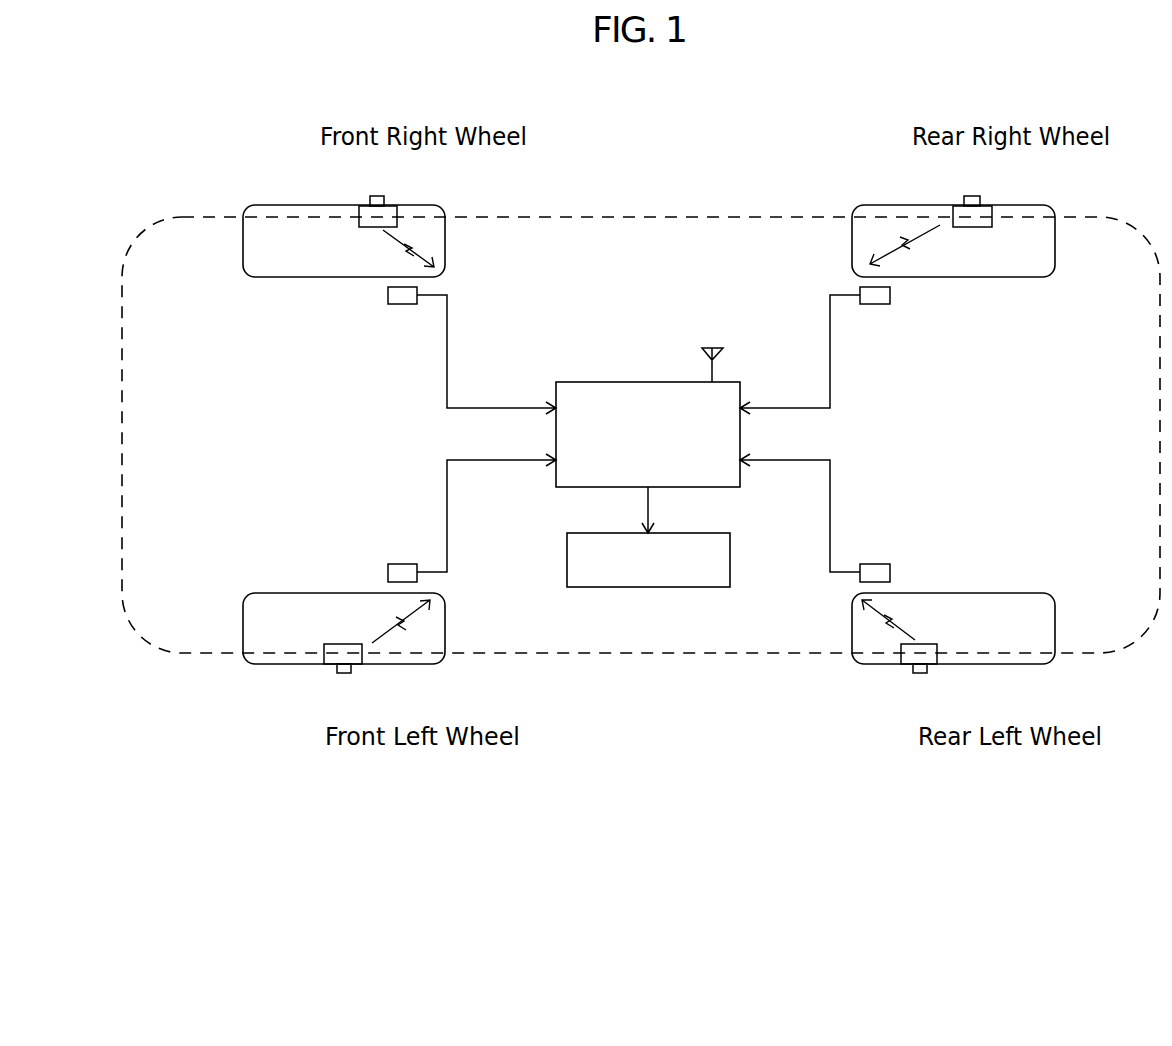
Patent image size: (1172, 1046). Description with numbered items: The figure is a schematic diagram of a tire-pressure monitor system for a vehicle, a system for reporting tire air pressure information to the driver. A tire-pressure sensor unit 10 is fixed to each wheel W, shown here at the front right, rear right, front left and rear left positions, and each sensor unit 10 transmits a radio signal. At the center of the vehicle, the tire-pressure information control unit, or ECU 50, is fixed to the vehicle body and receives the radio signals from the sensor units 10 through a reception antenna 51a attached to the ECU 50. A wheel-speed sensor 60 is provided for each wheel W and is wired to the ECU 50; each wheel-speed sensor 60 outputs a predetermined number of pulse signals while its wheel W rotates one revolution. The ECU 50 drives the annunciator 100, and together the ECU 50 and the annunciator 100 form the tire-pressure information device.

The tire-pressure sensor unit 10 is at (395, 205).
The tire-pressure information control unit 50 is at (596, 382).
The reception antenna 51a is at (714, 362).
The wheel-speed sensor 60 is at (402, 304).
The annunciator 100 is at (731, 559).
The wheel W is at (271, 205).